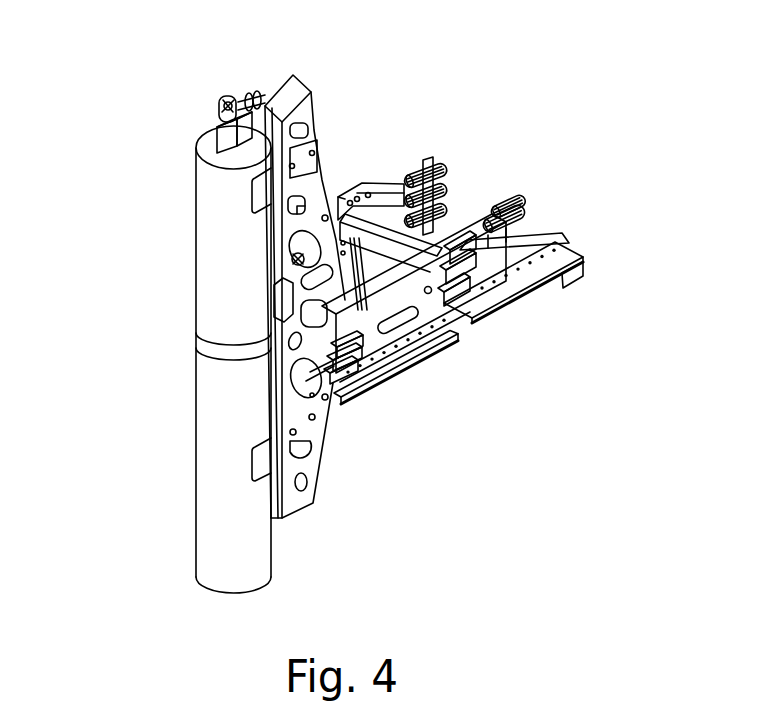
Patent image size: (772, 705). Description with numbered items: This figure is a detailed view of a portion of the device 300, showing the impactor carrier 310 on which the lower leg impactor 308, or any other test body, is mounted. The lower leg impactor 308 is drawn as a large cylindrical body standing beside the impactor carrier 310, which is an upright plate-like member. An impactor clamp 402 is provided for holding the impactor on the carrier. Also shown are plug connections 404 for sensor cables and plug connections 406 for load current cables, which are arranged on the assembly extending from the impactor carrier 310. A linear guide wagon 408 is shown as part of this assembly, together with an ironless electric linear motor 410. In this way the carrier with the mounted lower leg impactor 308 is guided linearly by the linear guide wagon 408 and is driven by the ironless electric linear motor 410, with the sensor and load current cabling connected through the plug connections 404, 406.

The device 300 is at (596, 101).
The lower leg impactor 308 is at (224, 235).
The impactor carrier 310 is at (310, 106).
The impactor clamp 402 is at (367, 211).
The plug connections for sensor cables 404 is at (459, 171).
The plug connections for load current cables 406 is at (470, 206).
The linear guide wagon 408 is at (484, 291).
The ironless electric linear motor 410 is at (427, 360).